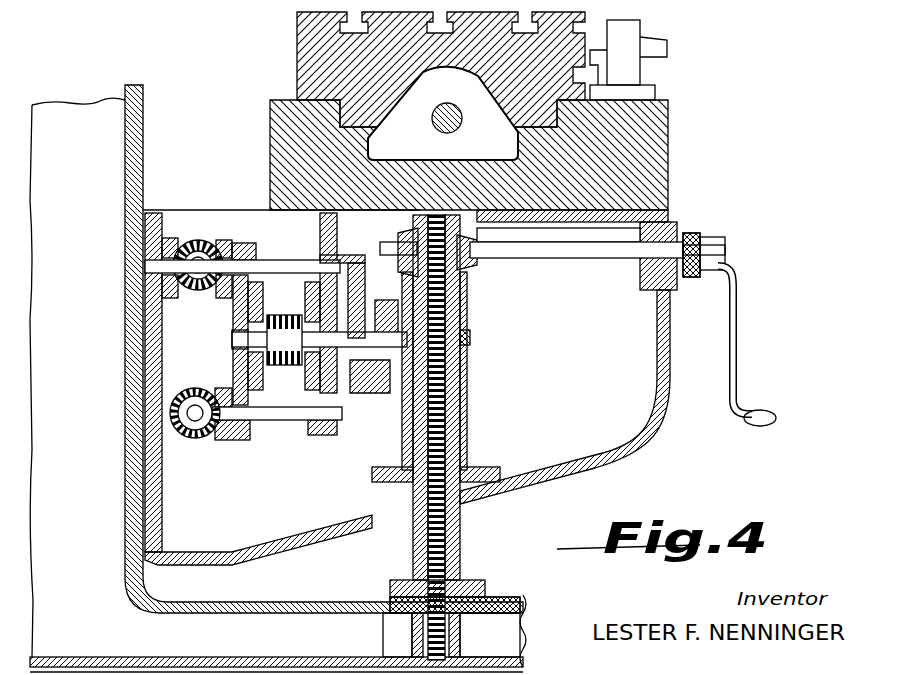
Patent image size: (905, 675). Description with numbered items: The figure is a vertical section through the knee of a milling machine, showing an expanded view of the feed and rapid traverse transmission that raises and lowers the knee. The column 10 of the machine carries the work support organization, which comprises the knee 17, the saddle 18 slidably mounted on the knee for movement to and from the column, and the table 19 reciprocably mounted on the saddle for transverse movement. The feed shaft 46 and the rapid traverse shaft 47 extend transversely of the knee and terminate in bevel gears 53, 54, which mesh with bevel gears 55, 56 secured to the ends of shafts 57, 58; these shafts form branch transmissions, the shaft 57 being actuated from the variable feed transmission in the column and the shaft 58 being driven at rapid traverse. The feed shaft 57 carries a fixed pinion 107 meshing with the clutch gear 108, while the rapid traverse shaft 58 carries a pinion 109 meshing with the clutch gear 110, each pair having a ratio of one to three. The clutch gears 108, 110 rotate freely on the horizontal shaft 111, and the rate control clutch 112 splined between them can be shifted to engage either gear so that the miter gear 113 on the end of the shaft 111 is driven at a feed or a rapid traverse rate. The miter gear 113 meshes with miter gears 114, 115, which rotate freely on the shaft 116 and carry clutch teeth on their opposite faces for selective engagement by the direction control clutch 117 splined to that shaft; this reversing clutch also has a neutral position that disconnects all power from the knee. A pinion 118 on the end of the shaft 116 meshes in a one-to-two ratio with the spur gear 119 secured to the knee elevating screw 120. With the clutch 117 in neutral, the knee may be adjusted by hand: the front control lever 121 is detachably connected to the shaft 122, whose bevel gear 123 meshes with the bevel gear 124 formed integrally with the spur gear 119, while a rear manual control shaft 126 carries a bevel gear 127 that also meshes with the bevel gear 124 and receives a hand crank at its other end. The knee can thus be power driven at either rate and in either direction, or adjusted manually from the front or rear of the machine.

The column 10 is at (145, 158).
The knee 17 is at (645, 437).
The saddle 18 is at (270, 115).
The table 19 is at (297, 52).
The feed shaft 46 is at (210, 242).
The rapid traverse shaft 47 is at (203, 440).
The bevel gear 53 is at (208, 240).
The bevel gear 54 is at (210, 396).
The bevel gear 55 is at (183, 236).
The bevel gear 56 is at (200, 442).
The branch transmission feed shaft 57 is at (282, 259).
The rapid traverse shaft 58 is at (266, 420).
The fixed pinion 107 is at (262, 230).
The clutch gear 108 is at (233, 335).
The pinion 109 is at (318, 438).
The clutch gear 110 is at (305, 430).
The horizontal shaft 111 is at (233, 340).
The rate control clutch 112 is at (293, 316).
The miter gear 113 is at (347, 370).
The miter gear 114 is at (468, 316).
The miter gear 115 is at (466, 370).
The shaft 116 is at (392, 395).
The direction control clutch 117 is at (470, 338).
The pinion 118 is at (352, 262).
The spur gear 119 is at (463, 275).
The knee elevating screw 120 is at (468, 395).
The front control lever 121 is at (737, 323).
The shaft 122 is at (588, 258).
The bevel gear 123 is at (500, 239).
The bevel gear 124 is at (478, 262).
The shaft 126 is at (380, 250).
The bevel gear 127 is at (408, 240).